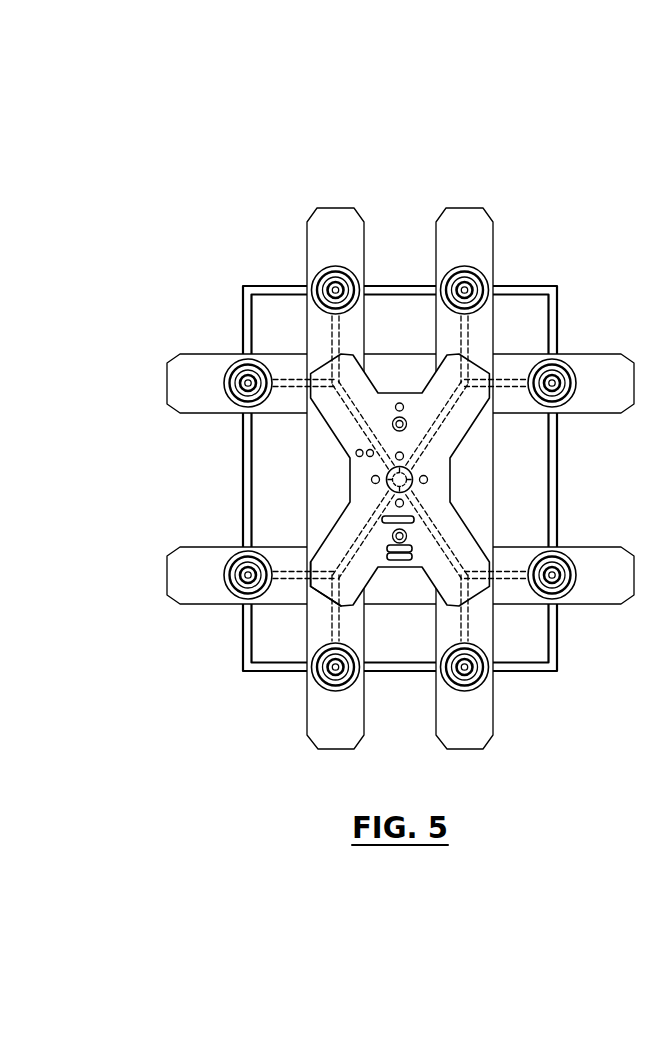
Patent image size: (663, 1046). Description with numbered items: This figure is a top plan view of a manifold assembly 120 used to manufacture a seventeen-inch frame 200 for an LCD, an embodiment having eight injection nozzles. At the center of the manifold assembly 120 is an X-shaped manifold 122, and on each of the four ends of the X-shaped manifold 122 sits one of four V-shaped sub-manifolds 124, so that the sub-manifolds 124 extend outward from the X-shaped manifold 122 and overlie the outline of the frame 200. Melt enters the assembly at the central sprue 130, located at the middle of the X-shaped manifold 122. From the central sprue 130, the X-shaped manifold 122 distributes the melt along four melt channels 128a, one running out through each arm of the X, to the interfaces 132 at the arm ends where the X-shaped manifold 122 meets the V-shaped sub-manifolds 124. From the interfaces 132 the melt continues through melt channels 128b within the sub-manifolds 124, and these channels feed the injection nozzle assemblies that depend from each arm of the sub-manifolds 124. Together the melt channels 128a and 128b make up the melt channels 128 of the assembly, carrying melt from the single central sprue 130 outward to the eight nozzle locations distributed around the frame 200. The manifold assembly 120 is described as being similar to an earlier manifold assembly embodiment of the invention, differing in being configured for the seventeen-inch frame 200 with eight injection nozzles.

The manifold assembly 120 is at (210, 162).
The X-shaped manifold 122 is at (332, 440).
The V-shaped sub-manifolds 124 is at (176, 358).
The melt channels 128 is at (208, 542).
The melt channels 128a is at (370, 531).
The melt channels 128b is at (318, 542).
The central sprue 130 is at (412, 476).
The interfaces 132 is at (311, 587).
The frame 200 is at (558, 665).